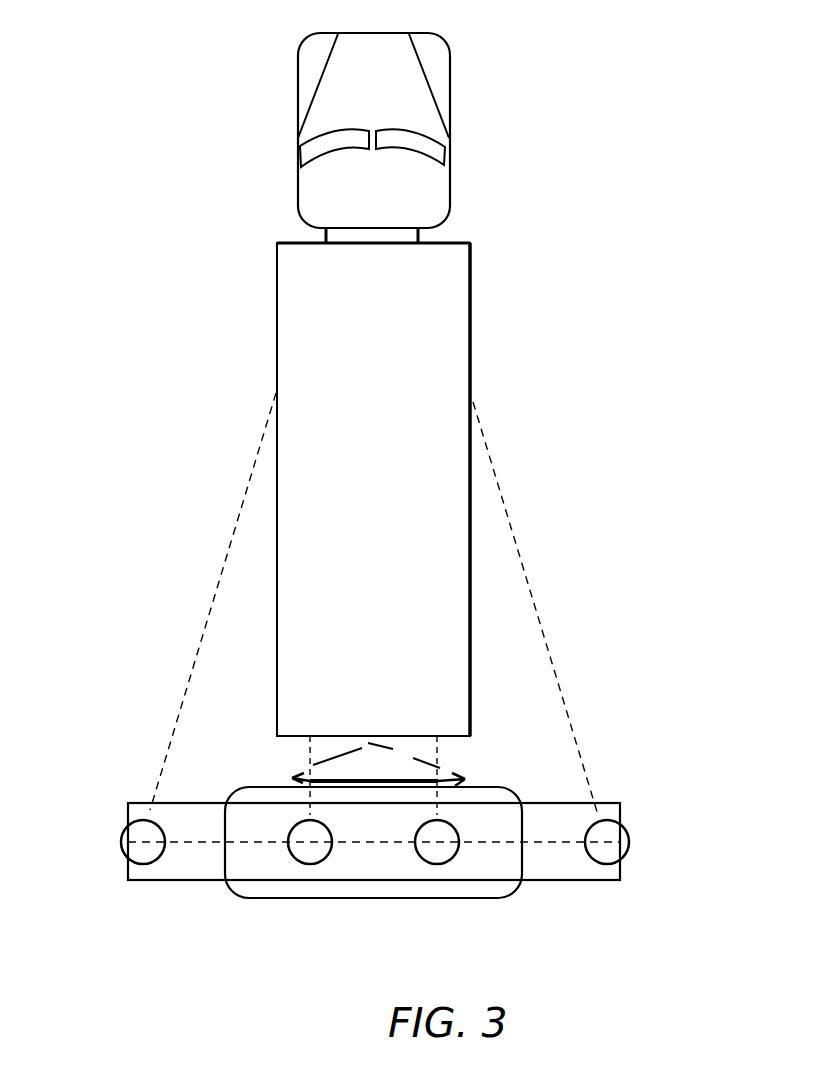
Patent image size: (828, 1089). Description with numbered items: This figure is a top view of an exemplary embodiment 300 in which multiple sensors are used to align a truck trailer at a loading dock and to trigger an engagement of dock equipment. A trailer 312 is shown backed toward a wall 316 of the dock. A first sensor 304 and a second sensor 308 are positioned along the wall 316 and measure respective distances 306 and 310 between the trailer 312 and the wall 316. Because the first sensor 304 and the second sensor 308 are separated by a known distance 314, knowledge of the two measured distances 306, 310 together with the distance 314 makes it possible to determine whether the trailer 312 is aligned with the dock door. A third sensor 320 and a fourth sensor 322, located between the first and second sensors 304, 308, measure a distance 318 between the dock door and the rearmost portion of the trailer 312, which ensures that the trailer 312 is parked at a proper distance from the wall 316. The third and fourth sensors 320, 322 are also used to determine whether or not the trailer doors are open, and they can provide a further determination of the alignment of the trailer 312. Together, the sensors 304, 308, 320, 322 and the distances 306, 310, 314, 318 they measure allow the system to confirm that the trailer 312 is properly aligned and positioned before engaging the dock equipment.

The exemplary embodiment 300 is at (545, 170).
The first sensor 304 is at (124, 843).
The distance 306 is at (243, 492).
The second sensor 308 is at (622, 842).
The distance 310 is at (508, 505).
The trailer 312 is at (470, 291).
The distance 314 is at (487, 842).
The wall 316 is at (555, 802).
The distance 318 is at (465, 775).
The third sensor 320 is at (312, 858).
The fourth sensor 322 is at (437, 858).